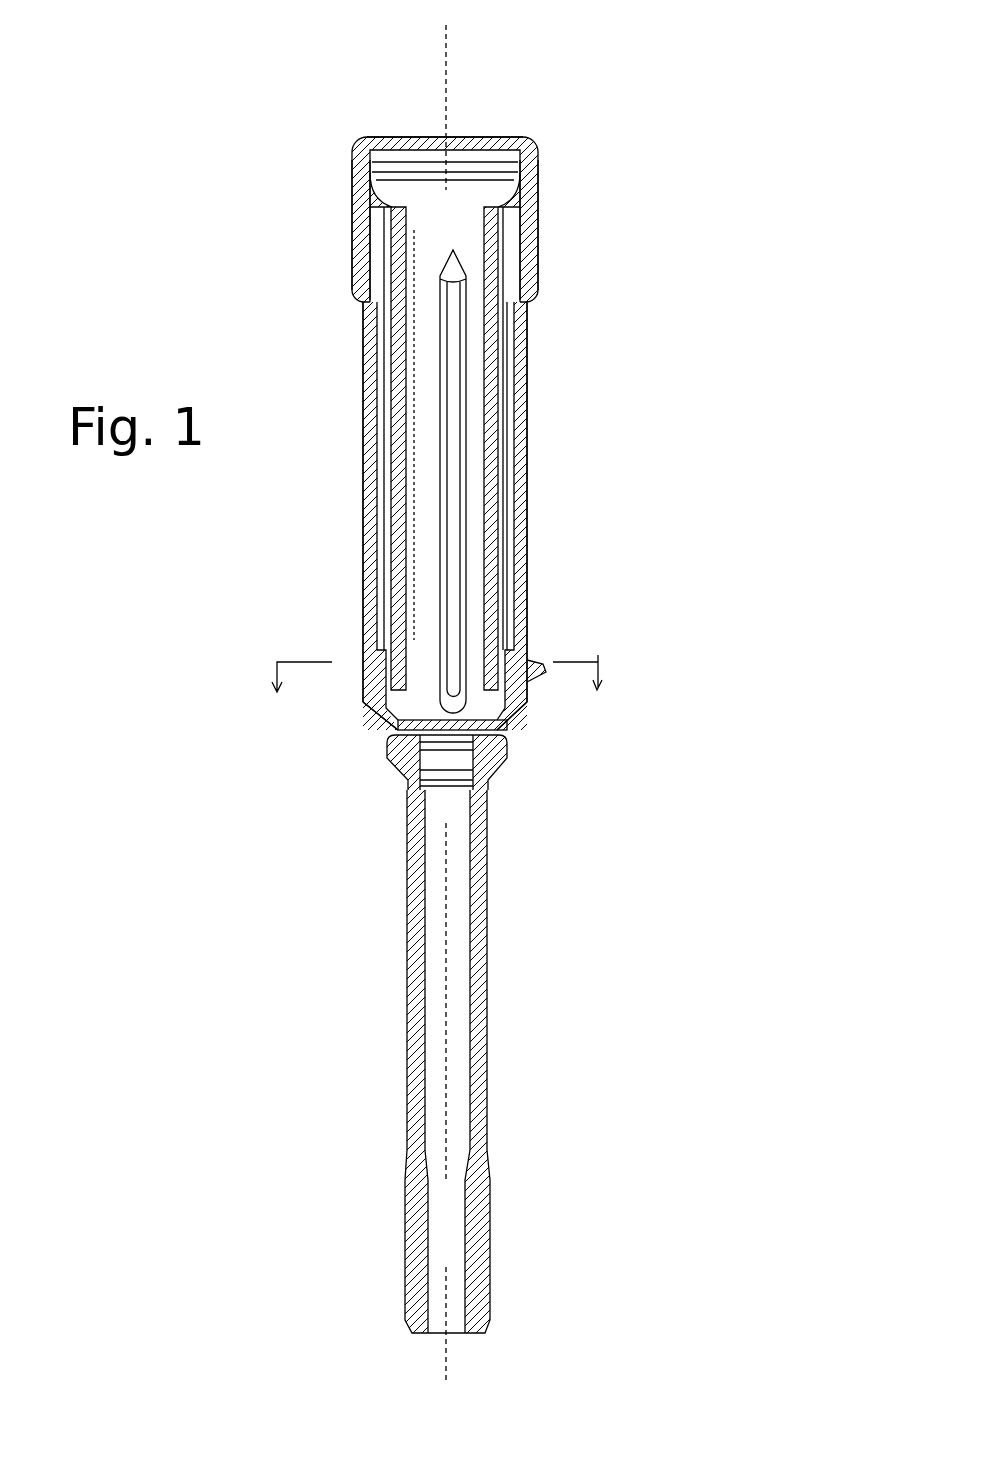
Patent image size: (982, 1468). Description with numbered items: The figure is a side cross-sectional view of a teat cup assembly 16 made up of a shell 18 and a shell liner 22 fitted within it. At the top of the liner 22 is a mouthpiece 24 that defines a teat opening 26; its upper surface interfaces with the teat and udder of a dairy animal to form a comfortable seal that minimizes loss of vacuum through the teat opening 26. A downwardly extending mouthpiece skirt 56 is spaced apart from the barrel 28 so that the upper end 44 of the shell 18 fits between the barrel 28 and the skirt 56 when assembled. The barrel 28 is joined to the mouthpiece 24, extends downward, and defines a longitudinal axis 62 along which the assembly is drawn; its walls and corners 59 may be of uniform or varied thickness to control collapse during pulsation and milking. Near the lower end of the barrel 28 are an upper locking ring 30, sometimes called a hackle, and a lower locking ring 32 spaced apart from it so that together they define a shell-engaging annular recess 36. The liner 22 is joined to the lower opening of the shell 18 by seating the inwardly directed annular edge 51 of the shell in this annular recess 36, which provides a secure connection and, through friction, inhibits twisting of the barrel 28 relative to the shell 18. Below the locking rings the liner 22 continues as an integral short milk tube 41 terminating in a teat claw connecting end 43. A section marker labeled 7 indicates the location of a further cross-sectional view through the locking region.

The section line 7- 7 is at (429, 670).
The teat cup assembly 16 is at (651, 298).
The shell 18 is at (527, 422).
The shell liner 22 is at (485, 363).
The mouthpiece 24 is at (538, 165).
The teat opening 26 is at (465, 138).
The barrel 28 is at (425, 462).
The upper locking ring 30 is at (523, 688).
The lower locking ring 32 is at (505, 757).
The shell-engaging annular recess 36 is at (370, 716).
The short milk tube 41 is at (485, 922).
The teat claw connecting end 43 is at (487, 1237).
The upper end 44 is at (532, 205).
The inwardly directed annular edge 51 is at (520, 712).
The mouthpiece skirt 56 is at (537, 250).
The corners 59 is at (455, 505).
The longitudinal axis 62 is at (436, 57).